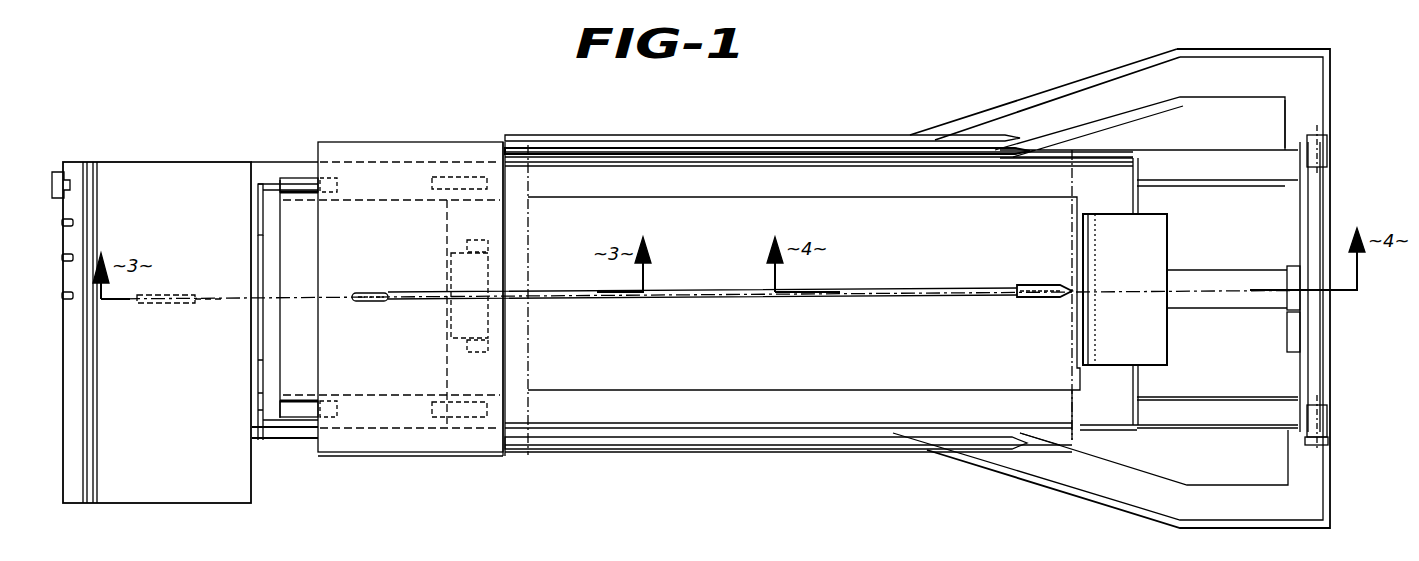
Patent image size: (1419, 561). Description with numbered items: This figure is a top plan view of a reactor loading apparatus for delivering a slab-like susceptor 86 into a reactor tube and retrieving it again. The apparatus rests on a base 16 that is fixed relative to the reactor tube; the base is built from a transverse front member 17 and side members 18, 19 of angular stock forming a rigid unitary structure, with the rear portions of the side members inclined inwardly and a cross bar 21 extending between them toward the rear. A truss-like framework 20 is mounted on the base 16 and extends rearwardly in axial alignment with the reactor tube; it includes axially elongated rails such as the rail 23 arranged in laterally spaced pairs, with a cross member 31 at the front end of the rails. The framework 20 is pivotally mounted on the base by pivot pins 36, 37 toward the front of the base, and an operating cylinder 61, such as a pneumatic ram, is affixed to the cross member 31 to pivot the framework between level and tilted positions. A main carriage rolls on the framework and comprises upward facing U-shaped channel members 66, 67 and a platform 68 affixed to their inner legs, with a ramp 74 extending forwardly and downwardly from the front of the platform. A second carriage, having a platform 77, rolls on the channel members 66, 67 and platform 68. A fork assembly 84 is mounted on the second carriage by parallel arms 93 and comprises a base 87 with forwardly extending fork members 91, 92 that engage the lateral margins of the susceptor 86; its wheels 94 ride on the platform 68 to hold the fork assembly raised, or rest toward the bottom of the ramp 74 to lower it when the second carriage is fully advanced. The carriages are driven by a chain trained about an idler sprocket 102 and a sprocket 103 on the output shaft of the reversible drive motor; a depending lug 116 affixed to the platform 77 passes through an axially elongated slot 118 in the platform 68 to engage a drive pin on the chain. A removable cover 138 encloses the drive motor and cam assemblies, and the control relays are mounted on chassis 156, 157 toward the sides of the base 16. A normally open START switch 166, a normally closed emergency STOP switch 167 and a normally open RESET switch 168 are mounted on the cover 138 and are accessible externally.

The base 16 is at (1212, 43).
The transverse front member 17 is at (1331, 82).
The side member 18 is at (1090, 78).
The side member 19 is at (1185, 516).
The truss-like framework 20 is at (1118, 147).
The cross bar / rail 21 is at (1230, 380).
The rail 23 is at (1220, 181).
The cross member 31 is at (1308, 340).
The pivot pin 36 is at (1328, 168).
The pivot pin 37 is at (1324, 404).
The operating cylinder 61 is at (1248, 257).
The channel member 66 is at (275, 430).
The channel member 67 is at (258, 182).
The platform 68 is at (262, 335).
The ramp 74 is at (1133, 281).
The platform 77 is at (308, 272).
The fork assembly 84 is at (490, 140).
The susceptor 86 is at (1020, 433).
The base 87 is at (385, 147).
The fork member 91 is at (836, 452).
The fork member 92 is at (893, 143).
The parallel arms 93 is at (296, 176).
The wheels 94 is at (490, 241).
The idler sprocket 102 is at (1045, 264).
The sprocket 103 is at (160, 294).
The depending lug 116 is at (372, 293).
The axially elongated slot 118 is at (703, 300).
The removable cover 138 is at (152, 495).
The chassis 156 is at (1247, 137).
The chassis 157 is at (1233, 461).
The START switch 166 is at (62, 178).
The emergency STOP switch 167 is at (73, 223).
The RESET switch 168 is at (73, 258).